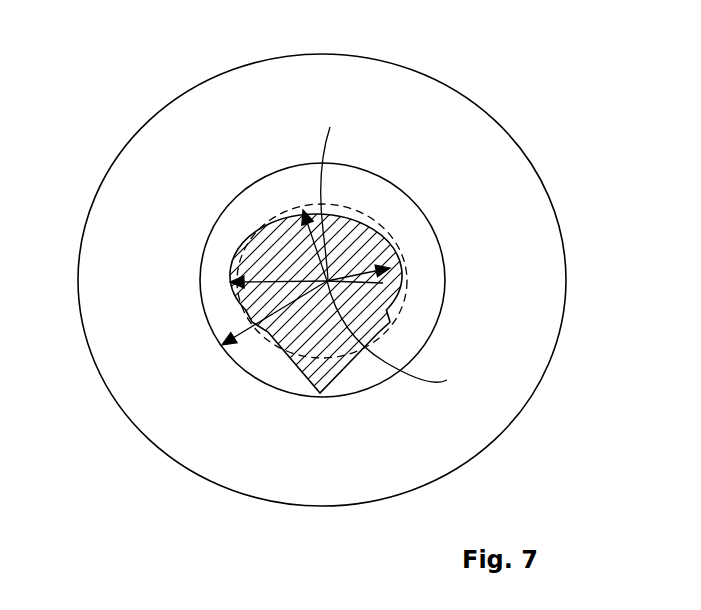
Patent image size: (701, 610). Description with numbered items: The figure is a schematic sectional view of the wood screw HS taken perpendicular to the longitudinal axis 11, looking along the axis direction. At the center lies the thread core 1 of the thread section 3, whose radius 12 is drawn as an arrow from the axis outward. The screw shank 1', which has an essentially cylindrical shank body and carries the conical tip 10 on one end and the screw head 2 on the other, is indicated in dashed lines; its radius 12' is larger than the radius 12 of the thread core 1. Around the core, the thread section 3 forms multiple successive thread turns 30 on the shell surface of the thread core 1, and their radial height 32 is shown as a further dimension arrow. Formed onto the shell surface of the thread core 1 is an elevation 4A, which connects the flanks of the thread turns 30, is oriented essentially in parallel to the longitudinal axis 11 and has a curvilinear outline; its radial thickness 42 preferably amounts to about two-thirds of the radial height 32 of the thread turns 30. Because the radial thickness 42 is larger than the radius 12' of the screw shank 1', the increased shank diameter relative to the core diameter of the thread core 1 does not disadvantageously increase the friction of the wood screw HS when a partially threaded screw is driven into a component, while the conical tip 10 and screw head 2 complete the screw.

The wood screw HS is at (110, 428).
The screw head 2 is at (334, 458).
The thread turns 30 is at (293, 183).
The thread core 1 is at (367, 274).
The screw shank 1' is at (302, 268).
The conical tip 10 is at (337, 233).
The radius of the screw shank 12' is at (333, 191).
The longitudinal axis 11 is at (404, 340).
The elevation 4A is at (242, 278).
The radius of the thread core 12 is at (415, 260).
The radial thickness of the elevations 42 is at (290, 282).
The radial height of the thread turns 32 is at (255, 323).
The thread section 3 is at (420, 318).